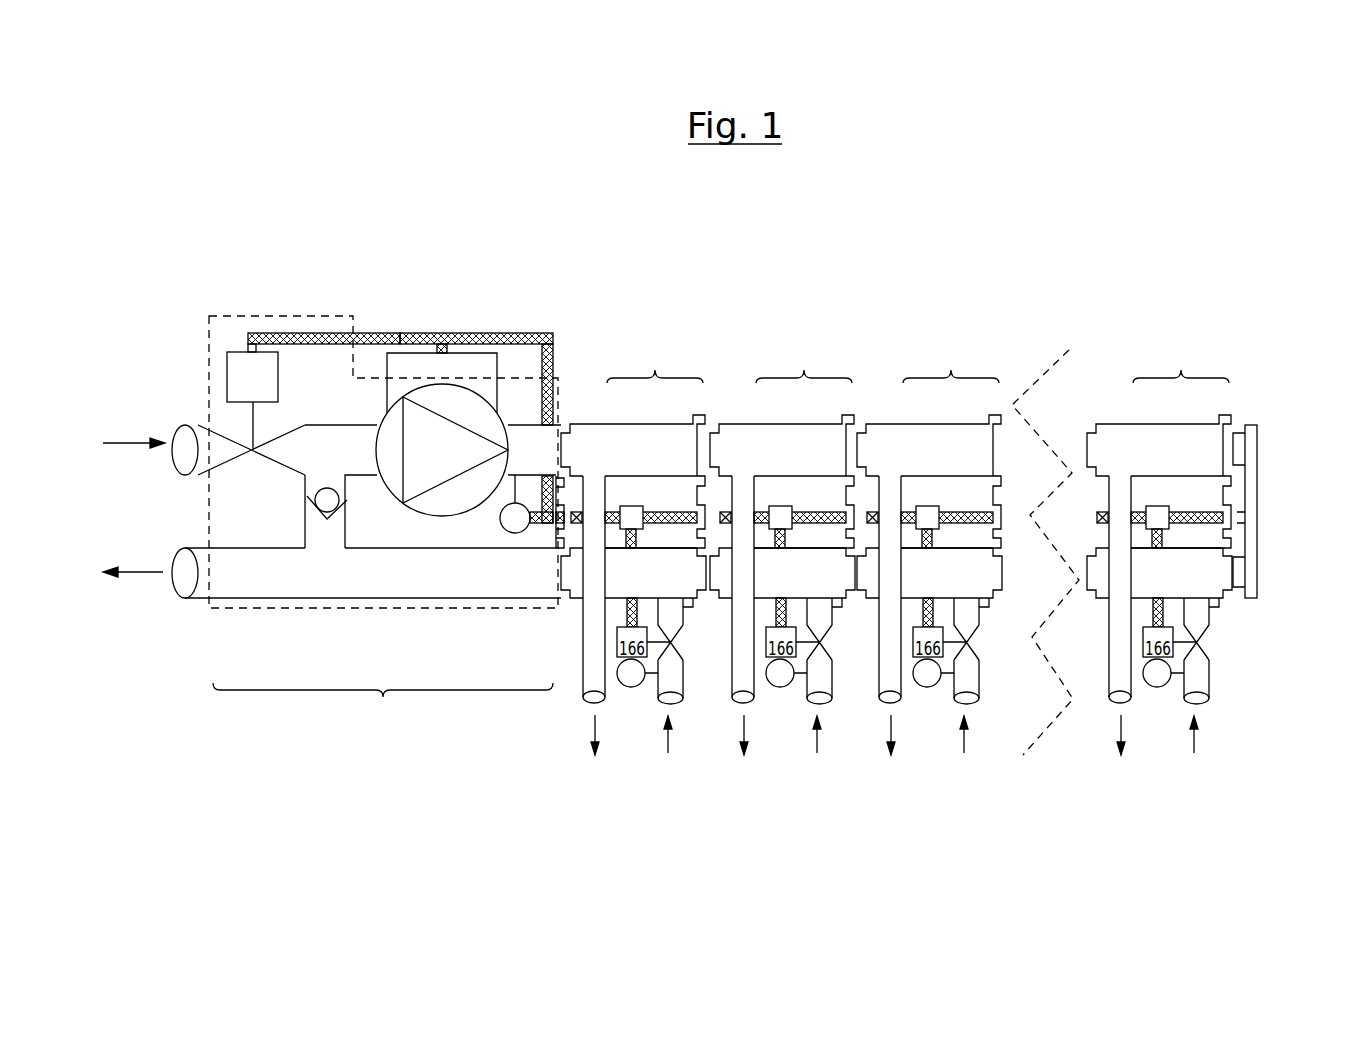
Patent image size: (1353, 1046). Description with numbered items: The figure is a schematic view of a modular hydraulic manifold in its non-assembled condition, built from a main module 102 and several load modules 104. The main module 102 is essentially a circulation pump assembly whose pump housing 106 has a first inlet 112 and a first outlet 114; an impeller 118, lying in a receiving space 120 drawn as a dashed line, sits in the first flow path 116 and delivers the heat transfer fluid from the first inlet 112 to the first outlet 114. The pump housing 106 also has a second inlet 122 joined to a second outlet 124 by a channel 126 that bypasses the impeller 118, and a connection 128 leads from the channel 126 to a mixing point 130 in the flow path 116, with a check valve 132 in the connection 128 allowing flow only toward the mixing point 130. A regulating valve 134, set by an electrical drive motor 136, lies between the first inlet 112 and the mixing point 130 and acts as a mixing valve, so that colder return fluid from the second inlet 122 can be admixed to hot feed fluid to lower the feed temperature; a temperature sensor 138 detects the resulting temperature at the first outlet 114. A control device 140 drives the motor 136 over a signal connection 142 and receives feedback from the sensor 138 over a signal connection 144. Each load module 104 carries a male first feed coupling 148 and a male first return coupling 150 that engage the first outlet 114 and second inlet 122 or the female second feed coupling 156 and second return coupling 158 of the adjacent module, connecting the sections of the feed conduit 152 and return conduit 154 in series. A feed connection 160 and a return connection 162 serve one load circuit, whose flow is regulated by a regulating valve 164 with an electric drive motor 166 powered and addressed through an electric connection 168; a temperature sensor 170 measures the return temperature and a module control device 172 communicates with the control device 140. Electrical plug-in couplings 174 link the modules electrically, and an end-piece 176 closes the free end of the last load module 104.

The main module 102 is at (383, 709).
The load module 104 is at (918, 361).
The pump housing 106 is at (273, 610).
The first inlet 112 is at (185, 465).
The first outlet 114 is at (564, 425).
The first flow path 116 is at (363, 438).
The impeller 118 is at (465, 378).
The receiving space 120 is at (462, 514).
The second inlet 122 is at (560, 600).
The second outlet 124 is at (185, 587).
The channel 126 is at (393, 586).
The connection 128 is at (303, 532).
The mixing point 130 is at (317, 438).
The check valve 132 is at (310, 497).
The regulating valve 134 is at (248, 437).
The electrical drive motor 136 is at (237, 398).
The temperature sensor 138 is at (514, 533).
The control device 140 is at (422, 365).
The signal connection 142 is at (289, 333).
The signal connection 144 is at (526, 333).
The first feed coupling 148 is at (587, 425).
The first return coupling 150 is at (570, 568).
The feed conduit section 152 is at (638, 466).
The return conduit section 154 is at (638, 586).
The second feed coupling 156 is at (702, 423).
The second return coupling 158 is at (690, 607).
The feed connection 160 is at (588, 704).
The return connection 162 is at (663, 705).
The regulating valve 164 is at (949, 731).
The electric drive motor 166 is at (906, 642).
The electric connection 168 is at (684, 512).
The temperature sensor 170 is at (877, 737).
The module control device 172 is at (632, 506).
The electrical plug-in coupling 174 is at (586, 479).
The end-piece 176 is at (1258, 512).